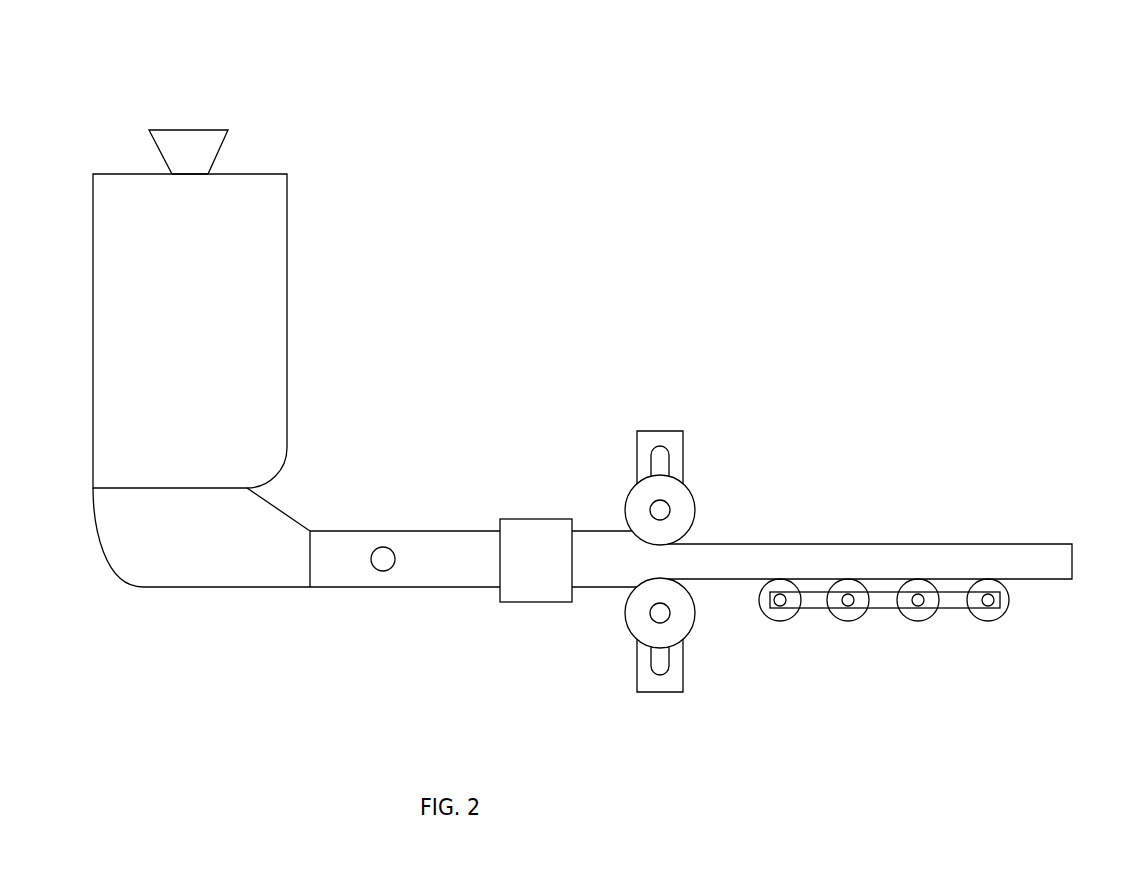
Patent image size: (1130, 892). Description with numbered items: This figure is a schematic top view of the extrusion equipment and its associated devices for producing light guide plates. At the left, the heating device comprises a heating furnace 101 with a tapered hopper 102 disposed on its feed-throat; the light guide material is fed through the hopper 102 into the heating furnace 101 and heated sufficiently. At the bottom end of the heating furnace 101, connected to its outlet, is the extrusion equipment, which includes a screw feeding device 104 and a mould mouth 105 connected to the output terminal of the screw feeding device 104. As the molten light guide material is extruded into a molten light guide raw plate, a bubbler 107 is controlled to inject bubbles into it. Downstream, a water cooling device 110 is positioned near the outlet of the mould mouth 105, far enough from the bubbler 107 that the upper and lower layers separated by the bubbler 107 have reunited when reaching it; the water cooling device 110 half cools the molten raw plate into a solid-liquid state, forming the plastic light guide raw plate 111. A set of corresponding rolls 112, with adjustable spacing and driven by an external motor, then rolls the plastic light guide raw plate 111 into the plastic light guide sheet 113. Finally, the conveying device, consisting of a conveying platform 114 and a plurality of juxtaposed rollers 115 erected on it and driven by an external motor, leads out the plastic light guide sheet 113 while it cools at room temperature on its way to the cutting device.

The heating furnace 101 is at (268, 350).
The hopper 102 is at (190, 152).
The screw feeding device 104 is at (205, 555).
The mould mouth 105 is at (347, 555).
The bubbler 107 is at (383, 571).
The water cooling device 110 is at (536, 550).
The plastic light guide raw plate 111 is at (627, 550).
The rolls 112 is at (673, 503).
The plastic light guide sheet 113 is at (835, 562).
The conveying platform 114 is at (955, 598).
The rollers 115 is at (847, 615).